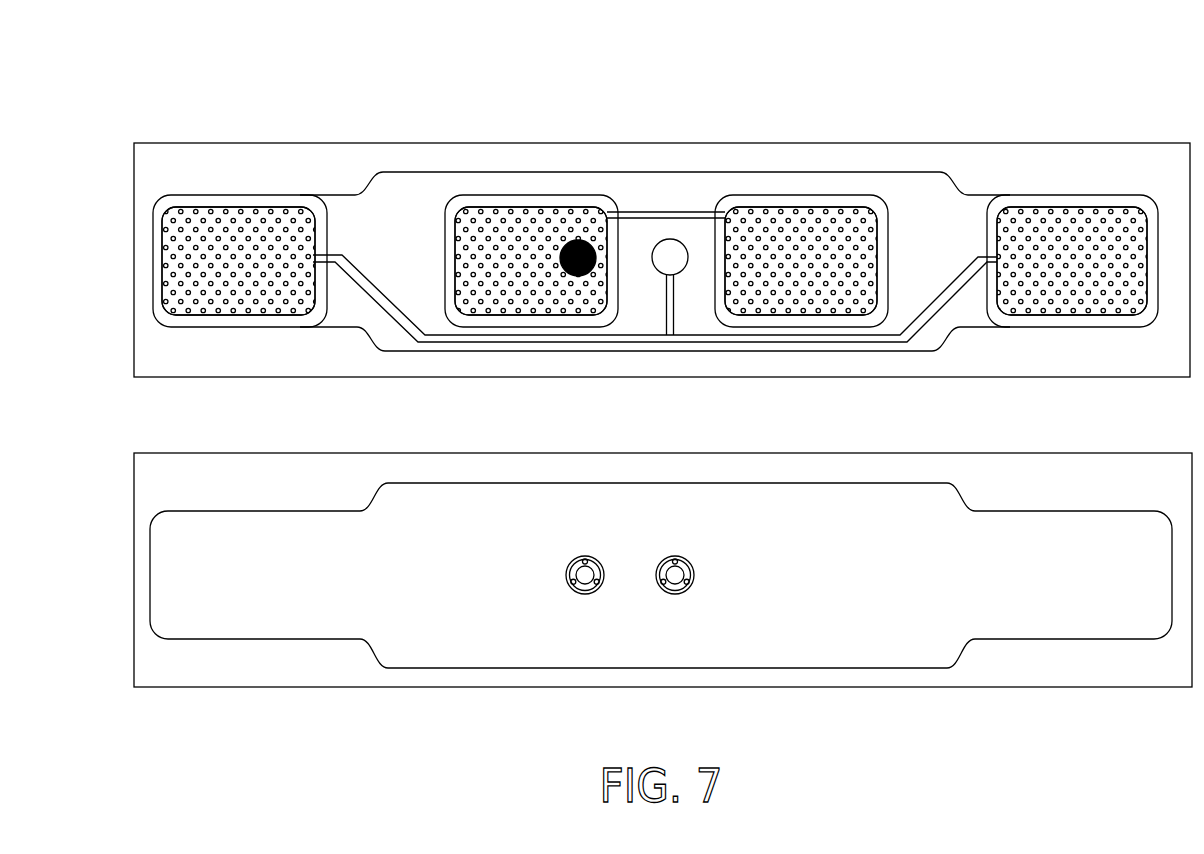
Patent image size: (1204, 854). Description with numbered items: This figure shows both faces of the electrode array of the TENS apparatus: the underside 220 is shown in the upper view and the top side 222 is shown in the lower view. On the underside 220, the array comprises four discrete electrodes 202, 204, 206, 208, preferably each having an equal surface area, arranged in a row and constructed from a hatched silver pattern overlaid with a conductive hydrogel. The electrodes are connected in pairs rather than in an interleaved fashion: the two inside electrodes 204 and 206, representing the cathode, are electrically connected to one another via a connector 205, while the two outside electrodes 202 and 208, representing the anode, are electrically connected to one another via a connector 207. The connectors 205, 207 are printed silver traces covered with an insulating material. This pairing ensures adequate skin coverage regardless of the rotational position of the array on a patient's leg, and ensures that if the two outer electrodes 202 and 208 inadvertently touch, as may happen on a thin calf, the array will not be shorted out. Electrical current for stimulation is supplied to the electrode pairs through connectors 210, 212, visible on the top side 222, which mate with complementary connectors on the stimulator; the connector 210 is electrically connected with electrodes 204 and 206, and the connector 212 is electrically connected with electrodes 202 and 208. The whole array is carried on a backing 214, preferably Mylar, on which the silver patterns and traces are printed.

The underside of electrode array 220 is at (662, 248).
The top side of electrode array 222 is at (663, 558).
The electrode 202 is at (240, 261).
The electrode 204 is at (531, 261).
The electrode 206 is at (801, 261).
The electrode 208 is at (1072, 261).
The connector 205 is at (620, 218).
The connector 207 is at (958, 262).
The connector 210 is at (575, 238).
The connector 212 is at (676, 238).
The backing 214 is at (238, 608).